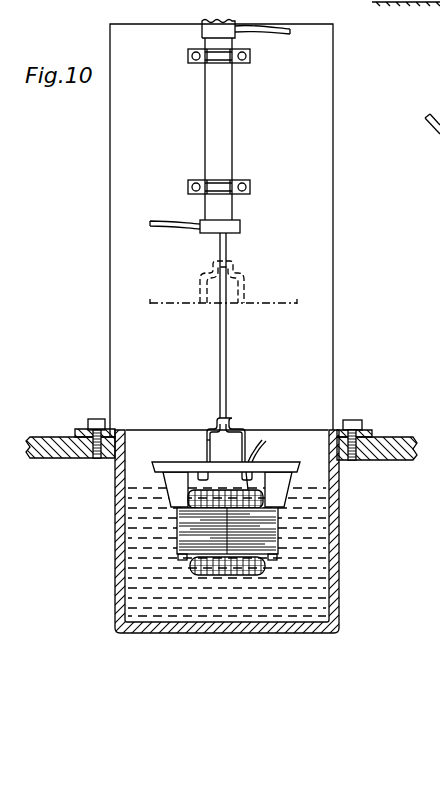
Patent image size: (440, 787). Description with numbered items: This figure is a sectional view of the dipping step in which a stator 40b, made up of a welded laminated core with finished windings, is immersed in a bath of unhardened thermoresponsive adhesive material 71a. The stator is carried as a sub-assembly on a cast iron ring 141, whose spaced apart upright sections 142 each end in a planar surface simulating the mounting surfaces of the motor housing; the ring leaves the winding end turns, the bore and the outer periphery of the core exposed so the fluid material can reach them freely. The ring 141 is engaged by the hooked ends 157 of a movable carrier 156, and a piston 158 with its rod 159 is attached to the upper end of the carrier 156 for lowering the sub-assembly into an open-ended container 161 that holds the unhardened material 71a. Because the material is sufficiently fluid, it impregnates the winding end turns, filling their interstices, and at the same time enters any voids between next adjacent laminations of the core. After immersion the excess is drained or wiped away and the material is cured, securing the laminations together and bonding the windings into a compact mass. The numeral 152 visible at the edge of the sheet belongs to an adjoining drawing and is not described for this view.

The piston 158 is at (222, 134).
The rod 159 is at (228, 336).
The movable carrier 156 is at (232, 424).
The hooked ends 157 is at (207, 443).
The cast iron ring 141 is at (287, 467).
The upright sections 142 is at (175, 490).
The stator 40b is at (178, 531).
The open-ended container 161 is at (340, 514).
The unhardened thermoresponsive material 71a is at (312, 573).
The frame 152 is at (357, 4).